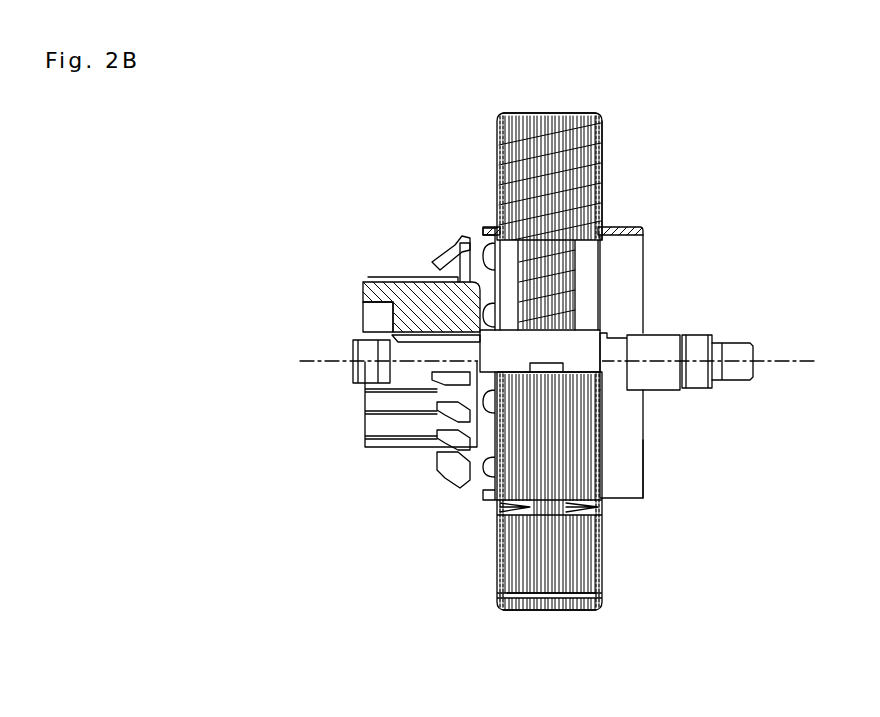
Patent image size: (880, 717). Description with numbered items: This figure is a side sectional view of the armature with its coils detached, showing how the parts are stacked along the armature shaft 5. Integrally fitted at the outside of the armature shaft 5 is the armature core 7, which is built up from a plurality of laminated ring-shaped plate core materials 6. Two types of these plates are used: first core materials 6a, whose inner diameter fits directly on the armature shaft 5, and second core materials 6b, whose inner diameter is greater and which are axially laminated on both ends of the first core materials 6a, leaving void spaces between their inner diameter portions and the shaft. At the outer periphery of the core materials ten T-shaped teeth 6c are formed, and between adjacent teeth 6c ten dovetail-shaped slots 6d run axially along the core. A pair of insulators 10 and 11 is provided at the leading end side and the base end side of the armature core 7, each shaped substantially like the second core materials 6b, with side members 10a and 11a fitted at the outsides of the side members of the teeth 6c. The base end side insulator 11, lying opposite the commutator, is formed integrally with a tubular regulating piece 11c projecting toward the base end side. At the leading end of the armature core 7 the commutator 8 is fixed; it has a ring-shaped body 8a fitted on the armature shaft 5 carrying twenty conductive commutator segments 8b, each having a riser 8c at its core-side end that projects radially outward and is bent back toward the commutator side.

The armature shaft 5 is at (663, 336).
The core materials 6 is at (542, 112).
The first core materials 6a is at (570, 112).
The second core materials 6b is at (509, 112).
The teeth 6c is at (553, 437).
The slots 6d is at (572, 508).
The armature core 7 is at (592, 94).
The commutator 8 is at (358, 273).
The ring-shaped body 8a is at (407, 318).
The commutator segments 8b is at (408, 282).
The risers 8c is at (468, 247).
The insulator 10 is at (494, 155).
The side member 10a is at (496, 507).
The insulator 11 is at (603, 193).
The side member 11a is at (603, 488).
The tubular regulating piece 11c is at (640, 226).